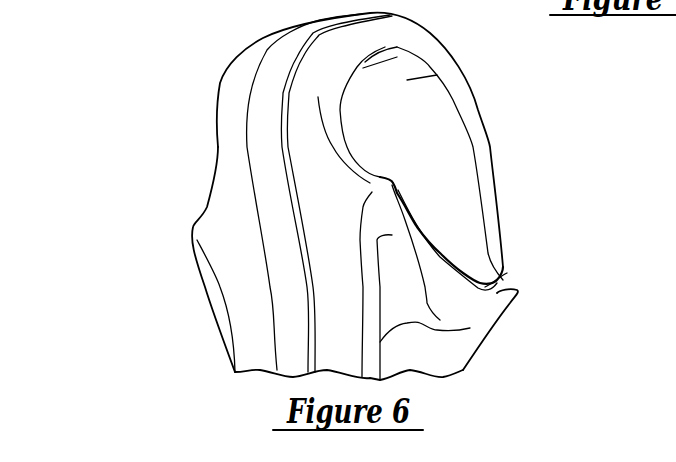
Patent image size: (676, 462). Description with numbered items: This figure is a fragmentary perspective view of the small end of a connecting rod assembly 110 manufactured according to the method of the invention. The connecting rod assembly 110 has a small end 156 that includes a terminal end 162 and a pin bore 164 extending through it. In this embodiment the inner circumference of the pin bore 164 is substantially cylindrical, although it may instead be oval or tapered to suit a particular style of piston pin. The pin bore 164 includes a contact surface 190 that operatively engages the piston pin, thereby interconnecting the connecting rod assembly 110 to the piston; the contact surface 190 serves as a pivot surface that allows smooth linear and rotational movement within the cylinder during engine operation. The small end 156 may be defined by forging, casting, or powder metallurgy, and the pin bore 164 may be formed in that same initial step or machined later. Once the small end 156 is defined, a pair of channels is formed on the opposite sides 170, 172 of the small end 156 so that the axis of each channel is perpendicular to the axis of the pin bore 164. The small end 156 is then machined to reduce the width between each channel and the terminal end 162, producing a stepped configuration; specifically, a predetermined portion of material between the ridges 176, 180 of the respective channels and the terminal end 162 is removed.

The connecting rod assembly 110 is at (152, 173).
The small end 156 is at (191, 138).
The terminal end 162 is at (260, 43).
The pin bore 164 is at (491, 87).
The contact surface 190 is at (433, 127).
The ridge 176 is at (193, 240).
The side 170 is at (247, 299).
The ridge 180 is at (505, 295).
The side 172 is at (410, 350).